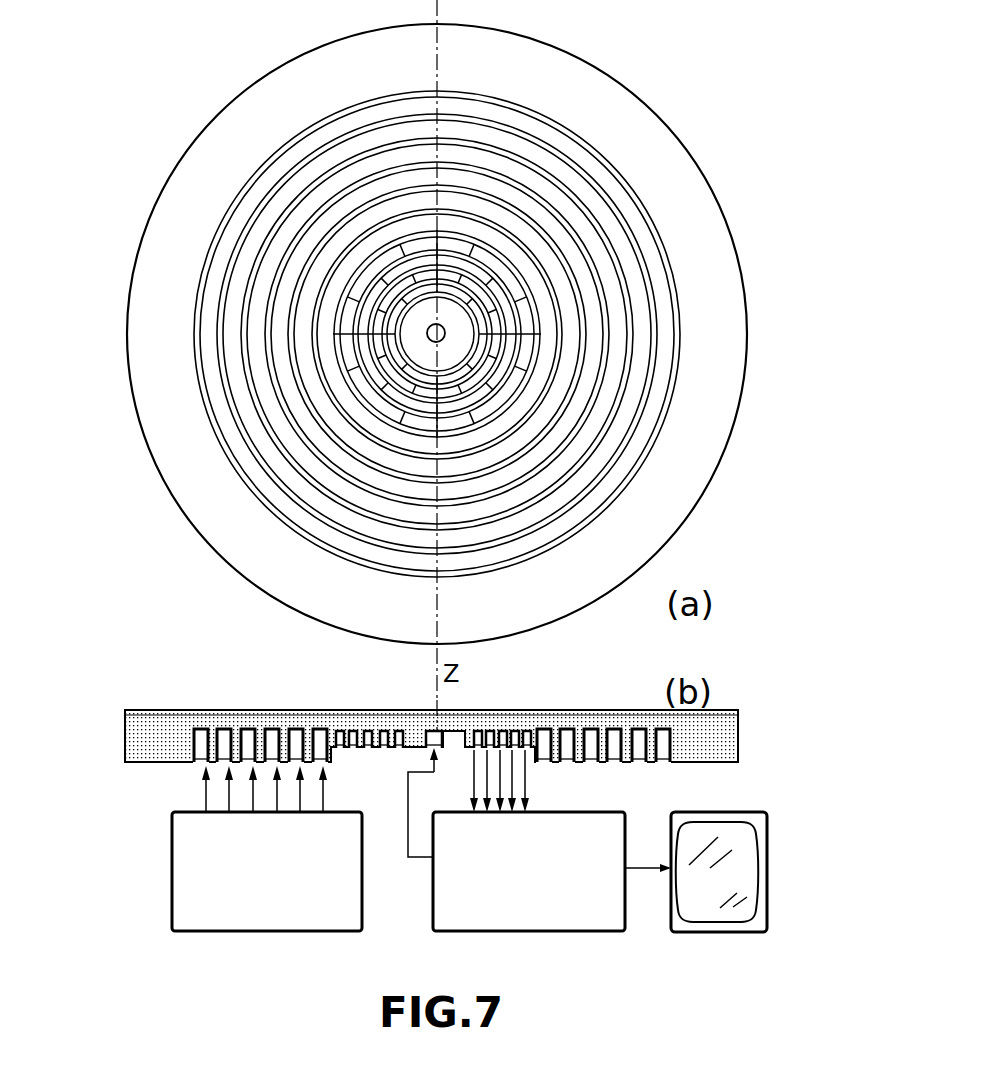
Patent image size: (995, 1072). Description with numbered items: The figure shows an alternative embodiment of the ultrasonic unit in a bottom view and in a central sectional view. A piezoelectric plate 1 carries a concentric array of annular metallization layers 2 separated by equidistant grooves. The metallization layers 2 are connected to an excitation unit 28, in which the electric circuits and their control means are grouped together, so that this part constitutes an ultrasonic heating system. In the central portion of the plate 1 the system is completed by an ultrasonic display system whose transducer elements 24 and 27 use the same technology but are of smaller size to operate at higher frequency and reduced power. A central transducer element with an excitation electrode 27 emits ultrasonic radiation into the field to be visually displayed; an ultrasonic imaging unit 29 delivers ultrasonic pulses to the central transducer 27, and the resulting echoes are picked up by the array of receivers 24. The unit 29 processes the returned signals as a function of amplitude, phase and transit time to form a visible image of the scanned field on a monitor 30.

The piezoelectric plate 1 is at (675, 137).
The annular metallization layers 2 is at (578, 222).
The array of receivers 24 is at (443, 227).
The central transducer element 27 is at (448, 331).
The excitation unit 28 is at (172, 905).
The ultrasonic imaging unit 29 is at (436, 905).
The monitor 30 is at (768, 904).